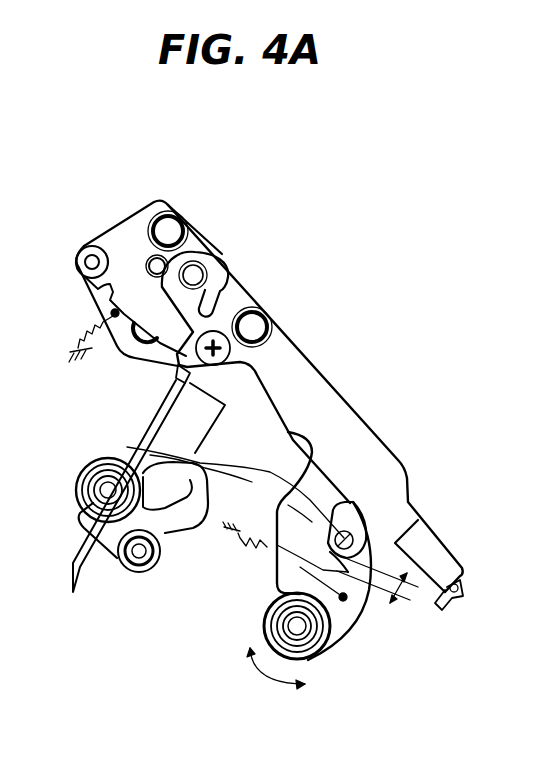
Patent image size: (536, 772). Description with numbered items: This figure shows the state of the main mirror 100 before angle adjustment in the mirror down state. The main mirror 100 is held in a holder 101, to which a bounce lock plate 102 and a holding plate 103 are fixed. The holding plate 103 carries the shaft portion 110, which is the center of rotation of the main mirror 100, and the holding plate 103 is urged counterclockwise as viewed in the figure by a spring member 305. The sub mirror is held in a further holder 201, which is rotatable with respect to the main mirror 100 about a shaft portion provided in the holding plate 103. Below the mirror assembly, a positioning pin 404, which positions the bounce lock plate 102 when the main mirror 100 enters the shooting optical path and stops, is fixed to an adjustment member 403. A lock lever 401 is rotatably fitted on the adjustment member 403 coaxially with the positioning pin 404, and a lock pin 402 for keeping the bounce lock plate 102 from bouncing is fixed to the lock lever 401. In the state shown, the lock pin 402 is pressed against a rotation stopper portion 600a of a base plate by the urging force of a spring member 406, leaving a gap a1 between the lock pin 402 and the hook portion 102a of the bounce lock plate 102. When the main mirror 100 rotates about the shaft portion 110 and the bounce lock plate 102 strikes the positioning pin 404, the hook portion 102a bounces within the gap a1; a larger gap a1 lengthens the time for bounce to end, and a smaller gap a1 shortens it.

The main mirror 100 is at (460, 597).
The holder 101 is at (338, 408).
The bounce lock plate 102 is at (157, 437).
The hook portion 102a is at (277, 545).
The holding plate 103 is at (132, 238).
The shaft portion 110 is at (88, 244).
The holder 201 is at (127, 447).
The spring member 305 is at (73, 346).
The lock lever 401 is at (343, 618).
The lock pin 402 is at (353, 533).
The adjustment member 403 is at (313, 658).
The positioning pin 404 is at (268, 628).
The spring member 406 is at (238, 540).
The rotation stopper portion 600a is at (300, 510).
The gap a1 is at (377, 593).